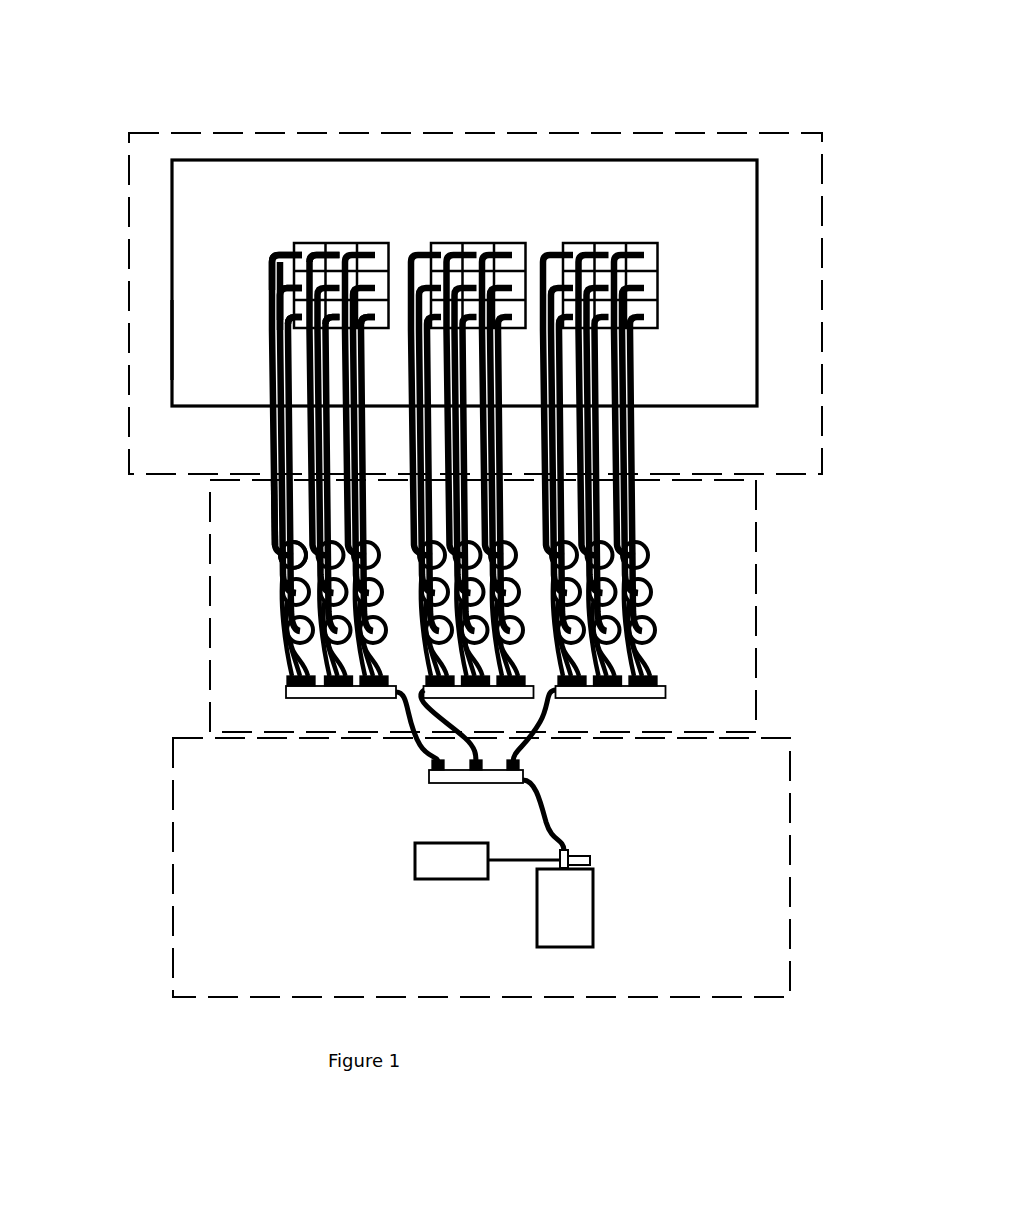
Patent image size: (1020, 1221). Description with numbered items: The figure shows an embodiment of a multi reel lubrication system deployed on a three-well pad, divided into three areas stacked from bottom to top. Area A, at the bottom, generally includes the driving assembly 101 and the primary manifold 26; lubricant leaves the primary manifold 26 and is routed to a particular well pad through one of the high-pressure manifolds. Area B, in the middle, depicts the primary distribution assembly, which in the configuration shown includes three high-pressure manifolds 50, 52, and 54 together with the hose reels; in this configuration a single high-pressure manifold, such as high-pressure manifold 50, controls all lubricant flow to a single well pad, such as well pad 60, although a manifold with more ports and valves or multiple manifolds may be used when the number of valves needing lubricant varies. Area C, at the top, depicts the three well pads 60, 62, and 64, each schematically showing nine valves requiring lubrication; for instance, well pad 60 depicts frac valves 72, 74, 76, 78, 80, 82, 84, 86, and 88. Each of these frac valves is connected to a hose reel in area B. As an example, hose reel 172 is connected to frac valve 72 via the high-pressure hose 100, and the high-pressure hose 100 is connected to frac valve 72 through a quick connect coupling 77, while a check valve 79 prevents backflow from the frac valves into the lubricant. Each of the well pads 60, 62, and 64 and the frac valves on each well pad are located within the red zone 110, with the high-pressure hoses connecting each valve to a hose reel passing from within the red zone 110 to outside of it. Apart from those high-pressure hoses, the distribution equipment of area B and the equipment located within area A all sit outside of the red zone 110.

The primary manifold 26 is at (428, 778).
The high-pressure manifold 50 is at (298, 692).
The high-pressure manifold 52 is at (428, 692).
The high-pressure manifold 54 is at (645, 690).
The well pad 60 is at (203, 303).
The well pad 62 is at (502, 203).
The well pad 64 is at (648, 200).
The frac valve 72 is at (303, 252).
The frac valve 74 is at (342, 256).
The frac valve 76 is at (378, 255).
The quick connect coupling 77 is at (285, 257).
The frac valve 78 is at (292, 272).
The check valve 79 is at (292, 256).
The frac valve 80 is at (330, 253).
The frac valve 82 is at (392, 262).
The frac valve 84 is at (305, 327).
The frac valve 86 is at (332, 333).
The frac valve 88 is at (367, 335).
The high-pressure hose 100 is at (265, 517).
The driving assembly 101 is at (647, 882).
The red zone 110 is at (172, 337).
The hose reel 172 is at (272, 562).
The area A is at (742, 827).
The area B is at (742, 567).
The area C is at (808, 323).